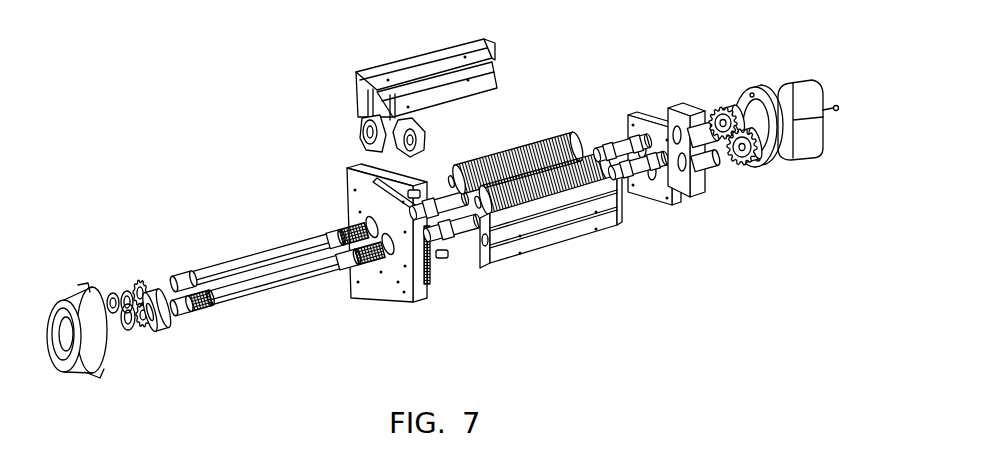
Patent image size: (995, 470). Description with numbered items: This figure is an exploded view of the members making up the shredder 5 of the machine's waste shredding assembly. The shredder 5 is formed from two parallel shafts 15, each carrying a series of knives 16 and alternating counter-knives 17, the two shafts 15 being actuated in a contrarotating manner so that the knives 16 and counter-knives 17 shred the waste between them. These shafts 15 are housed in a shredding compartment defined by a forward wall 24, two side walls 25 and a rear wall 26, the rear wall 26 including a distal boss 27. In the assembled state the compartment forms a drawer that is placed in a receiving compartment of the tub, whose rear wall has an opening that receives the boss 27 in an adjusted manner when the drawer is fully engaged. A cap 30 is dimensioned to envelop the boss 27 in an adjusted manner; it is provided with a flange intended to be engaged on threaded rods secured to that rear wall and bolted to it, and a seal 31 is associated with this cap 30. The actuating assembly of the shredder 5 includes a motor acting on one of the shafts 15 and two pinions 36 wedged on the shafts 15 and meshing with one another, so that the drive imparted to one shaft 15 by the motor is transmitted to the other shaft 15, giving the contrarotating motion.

The shredder 5 is at (577, 132).
The shafts 15 is at (295, 238).
The knives 16 is at (428, 140).
The counter-knives 17 is at (364, 127).
The forward wall 24 is at (420, 282).
The side walls 25 is at (414, 58).
The rear wall 26 is at (658, 113).
The distal boss 27 is at (680, 117).
The cap 30 is at (817, 153).
The seal 31 is at (733, 100).
The pinions 36 is at (753, 167).